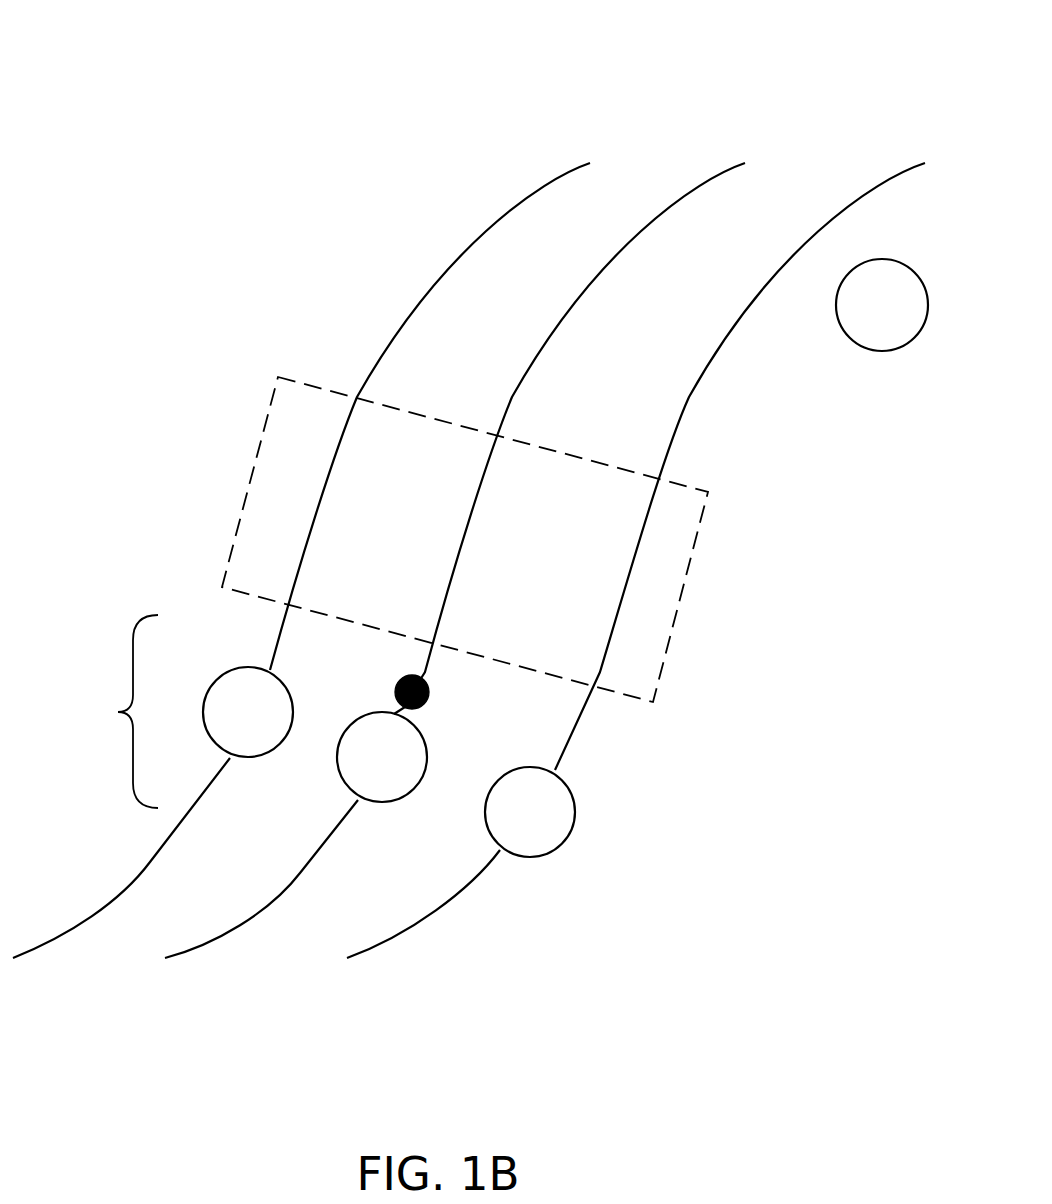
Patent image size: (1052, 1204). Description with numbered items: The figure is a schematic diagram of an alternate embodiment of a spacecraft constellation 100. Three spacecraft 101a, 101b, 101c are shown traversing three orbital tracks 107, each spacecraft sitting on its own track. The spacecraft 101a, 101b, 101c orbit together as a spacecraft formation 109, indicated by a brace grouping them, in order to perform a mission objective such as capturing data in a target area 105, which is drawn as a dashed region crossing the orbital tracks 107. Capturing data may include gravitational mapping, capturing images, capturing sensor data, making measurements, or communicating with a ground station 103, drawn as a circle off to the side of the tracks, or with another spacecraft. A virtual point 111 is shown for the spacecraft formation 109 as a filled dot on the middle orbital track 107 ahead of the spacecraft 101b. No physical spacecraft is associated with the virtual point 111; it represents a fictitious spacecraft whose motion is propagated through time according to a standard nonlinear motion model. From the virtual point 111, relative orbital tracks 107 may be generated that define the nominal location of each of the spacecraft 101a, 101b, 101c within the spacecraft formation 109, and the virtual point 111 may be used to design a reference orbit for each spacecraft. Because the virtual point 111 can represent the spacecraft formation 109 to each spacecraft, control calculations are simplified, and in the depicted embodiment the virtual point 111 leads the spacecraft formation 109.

The spacecraft constellation 100 is at (78, 69).
The spacecraft 101a is at (530, 812).
The spacecraft 101b is at (382, 757).
The spacecraft 101c is at (248, 712).
The ground station 103 is at (882, 305).
The target area 105 is at (679, 608).
The orbital track 107 is at (434, 281).
The spacecraft formation 109 is at (95, 711).
The virtual point 111 is at (428, 695).